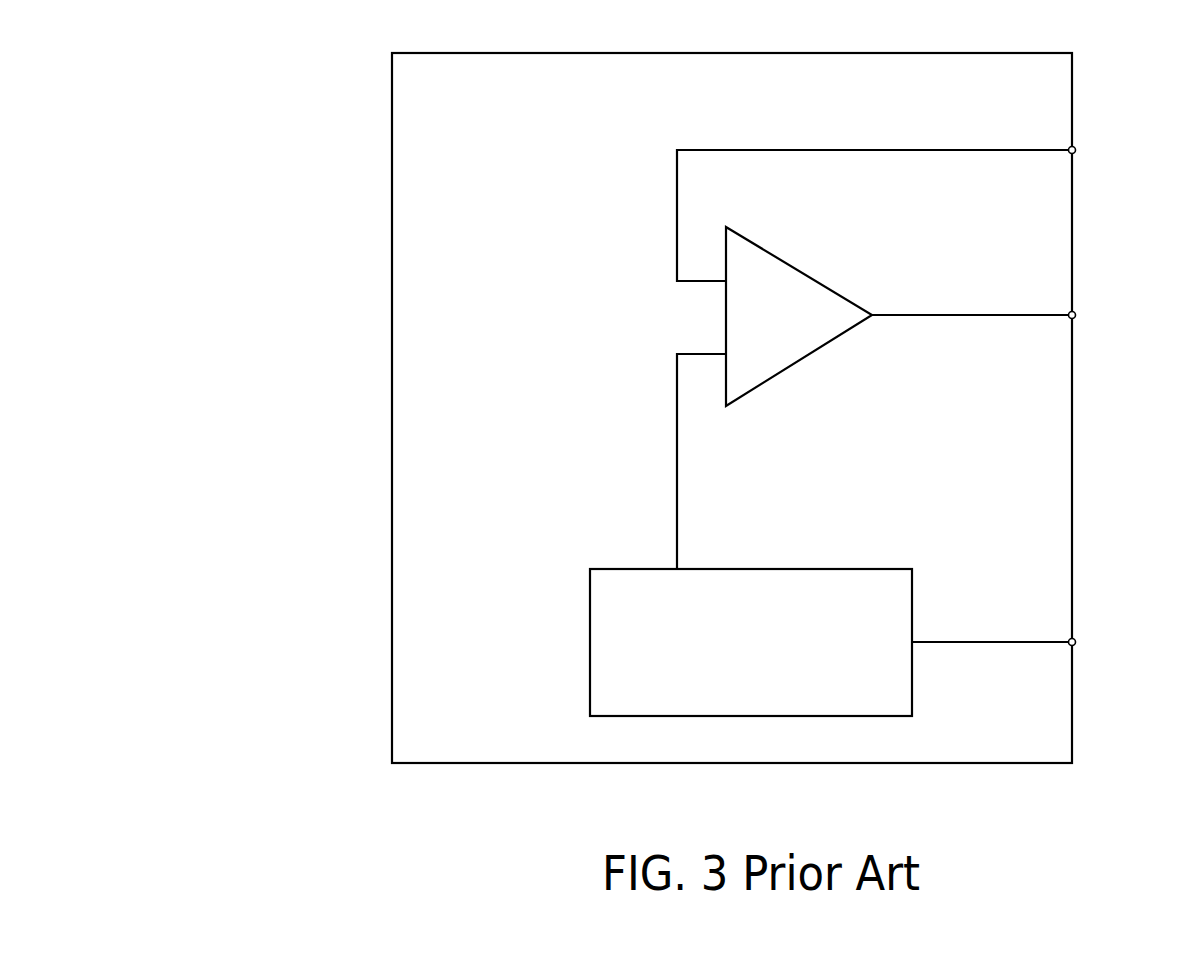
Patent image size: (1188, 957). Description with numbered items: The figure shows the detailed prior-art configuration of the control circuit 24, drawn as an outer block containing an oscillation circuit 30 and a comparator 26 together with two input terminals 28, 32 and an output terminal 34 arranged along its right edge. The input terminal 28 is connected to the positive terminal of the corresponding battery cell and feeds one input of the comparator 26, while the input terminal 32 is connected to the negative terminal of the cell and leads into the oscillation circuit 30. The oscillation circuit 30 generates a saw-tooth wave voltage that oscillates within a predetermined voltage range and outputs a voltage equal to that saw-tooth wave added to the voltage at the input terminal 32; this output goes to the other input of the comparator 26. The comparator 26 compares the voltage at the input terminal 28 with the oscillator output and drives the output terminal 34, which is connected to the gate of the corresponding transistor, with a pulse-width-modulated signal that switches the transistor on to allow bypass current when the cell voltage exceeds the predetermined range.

The control circuit 24 is at (175, 42).
The comparator 26 is at (800, 270).
The input terminal 28 is at (1076, 150).
The oscillation circuit 30 is at (590, 693).
The input terminal 32 is at (1076, 642).
The output terminal 34 is at (1076, 315).